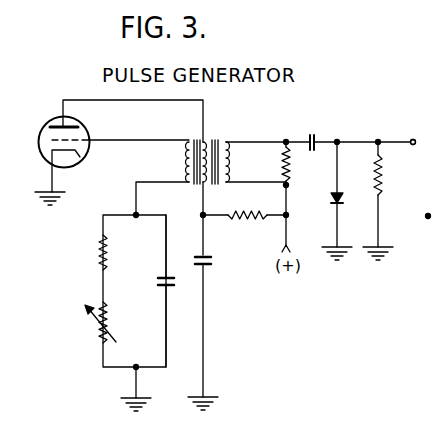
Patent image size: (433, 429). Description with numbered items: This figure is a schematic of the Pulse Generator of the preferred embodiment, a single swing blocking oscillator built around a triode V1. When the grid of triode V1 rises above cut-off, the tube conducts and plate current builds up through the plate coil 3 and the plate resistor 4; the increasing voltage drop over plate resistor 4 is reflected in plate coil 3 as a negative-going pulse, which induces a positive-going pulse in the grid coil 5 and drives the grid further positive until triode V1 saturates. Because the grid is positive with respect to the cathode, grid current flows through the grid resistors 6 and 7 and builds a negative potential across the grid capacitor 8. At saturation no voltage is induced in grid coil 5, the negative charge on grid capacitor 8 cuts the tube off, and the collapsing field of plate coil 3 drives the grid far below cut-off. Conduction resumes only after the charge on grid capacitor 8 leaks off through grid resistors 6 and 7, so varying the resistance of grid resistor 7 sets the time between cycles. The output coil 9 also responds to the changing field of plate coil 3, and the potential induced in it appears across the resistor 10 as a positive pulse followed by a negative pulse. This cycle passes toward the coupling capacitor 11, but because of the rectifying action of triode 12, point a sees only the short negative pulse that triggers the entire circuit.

The triode V1 is at (45, 123).
The plate coil 3 is at (204, 141).
The plate resistor 4 is at (240, 218).
The grid coil 5 is at (183, 161).
The grid resistor 6 is at (107, 253).
The grid resistor 7 is at (107, 321).
The grid capacitor 8 is at (158, 281).
The output coil 9 is at (232, 170).
The resistor 10 is at (289, 176).
The coupling capacitor 11 is at (316, 139).
The triode 12 is at (332, 197).
The point a is at (389, 142).